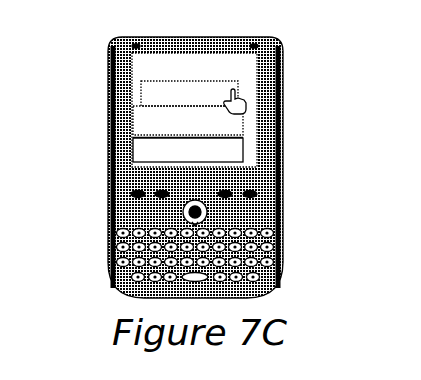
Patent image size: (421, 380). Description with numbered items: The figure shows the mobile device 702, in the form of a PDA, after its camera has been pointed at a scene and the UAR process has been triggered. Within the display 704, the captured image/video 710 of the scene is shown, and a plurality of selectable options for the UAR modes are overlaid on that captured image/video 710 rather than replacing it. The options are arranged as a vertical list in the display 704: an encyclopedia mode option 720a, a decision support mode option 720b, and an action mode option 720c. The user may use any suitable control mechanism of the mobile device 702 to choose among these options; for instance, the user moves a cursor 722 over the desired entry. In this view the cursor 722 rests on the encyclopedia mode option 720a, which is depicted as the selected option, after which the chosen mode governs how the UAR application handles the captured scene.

The mobile device 702 is at (280, 174).
The display 704 is at (252, 58).
The image/video 710 is at (238, 153).
The cursor 722 is at (250, 106).
The encyclopedia mode option 720a is at (141, 96).
The decision support mode option 720b is at (140, 125).
The action mode option 720c is at (140, 157).